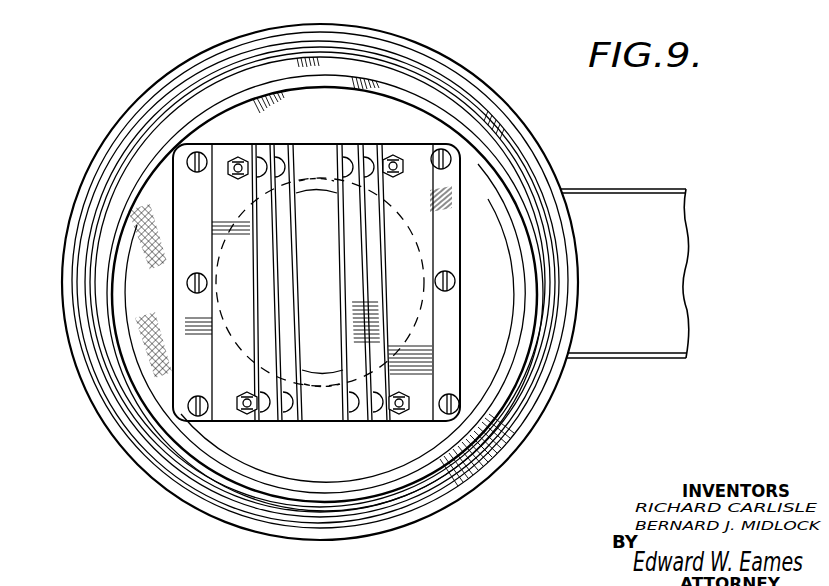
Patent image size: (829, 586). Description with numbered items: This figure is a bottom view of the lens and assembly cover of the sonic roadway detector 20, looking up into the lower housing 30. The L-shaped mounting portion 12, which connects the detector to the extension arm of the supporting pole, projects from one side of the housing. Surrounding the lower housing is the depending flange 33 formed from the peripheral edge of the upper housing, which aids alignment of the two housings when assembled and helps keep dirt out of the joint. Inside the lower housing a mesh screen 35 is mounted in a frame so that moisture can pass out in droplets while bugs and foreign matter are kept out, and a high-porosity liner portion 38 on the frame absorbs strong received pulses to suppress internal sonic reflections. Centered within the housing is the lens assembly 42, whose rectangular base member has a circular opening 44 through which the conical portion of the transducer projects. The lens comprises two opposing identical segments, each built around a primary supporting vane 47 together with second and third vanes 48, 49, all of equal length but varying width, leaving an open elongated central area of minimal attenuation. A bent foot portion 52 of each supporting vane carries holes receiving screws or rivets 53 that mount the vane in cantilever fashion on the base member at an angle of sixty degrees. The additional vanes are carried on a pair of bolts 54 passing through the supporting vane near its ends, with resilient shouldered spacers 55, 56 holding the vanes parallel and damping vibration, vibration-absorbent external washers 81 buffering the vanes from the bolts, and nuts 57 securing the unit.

The mounting portion 12 is at (631, 188).
The detector 20 is at (190, 50).
The lower housing 30 is at (98, 357).
The depending flange 33 is at (70, 233).
The screen 35 is at (137, 298).
The liner portion 38 is at (217, 457).
The lens assembly 42 is at (474, 199).
The circular opening 44 is at (321, 375).
The primary vane 47 is at (385, 148).
The second lens vane 48 is at (364, 146).
The third lens vane 49 is at (348, 146).
The foot portion 52 is at (452, 318).
The screws or rivets 53 is at (450, 279).
The bolts 54 is at (408, 406).
The spacer 55 is at (385, 178).
The spacer 56 is at (350, 176).
The nuts 57 is at (409, 393).
The external washer 81 is at (250, 414).